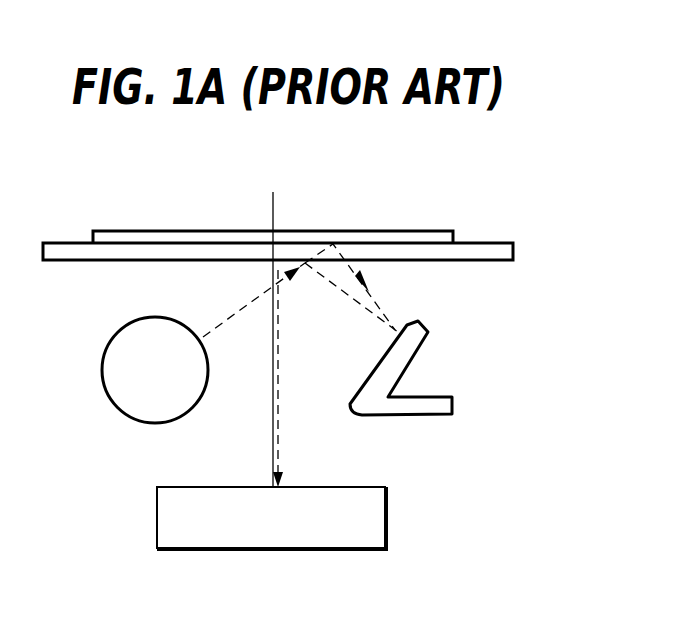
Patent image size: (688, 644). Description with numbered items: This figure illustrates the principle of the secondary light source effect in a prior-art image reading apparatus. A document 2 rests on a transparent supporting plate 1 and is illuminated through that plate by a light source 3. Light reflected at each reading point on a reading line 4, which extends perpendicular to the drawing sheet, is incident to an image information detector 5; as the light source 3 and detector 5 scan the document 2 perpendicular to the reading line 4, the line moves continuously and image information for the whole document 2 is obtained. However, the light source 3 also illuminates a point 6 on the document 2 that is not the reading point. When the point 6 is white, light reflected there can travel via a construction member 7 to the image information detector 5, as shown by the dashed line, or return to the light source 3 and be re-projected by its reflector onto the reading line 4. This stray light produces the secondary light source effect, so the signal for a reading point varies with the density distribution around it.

The supporting plate 1 is at (513, 253).
The document 2 is at (415, 231).
The light source 3 is at (128, 421).
The reading line 4 is at (275, 241).
The image information detector 5 is at (386, 518).
The point 6 is at (333, 246).
The construction member 7 is at (453, 404).